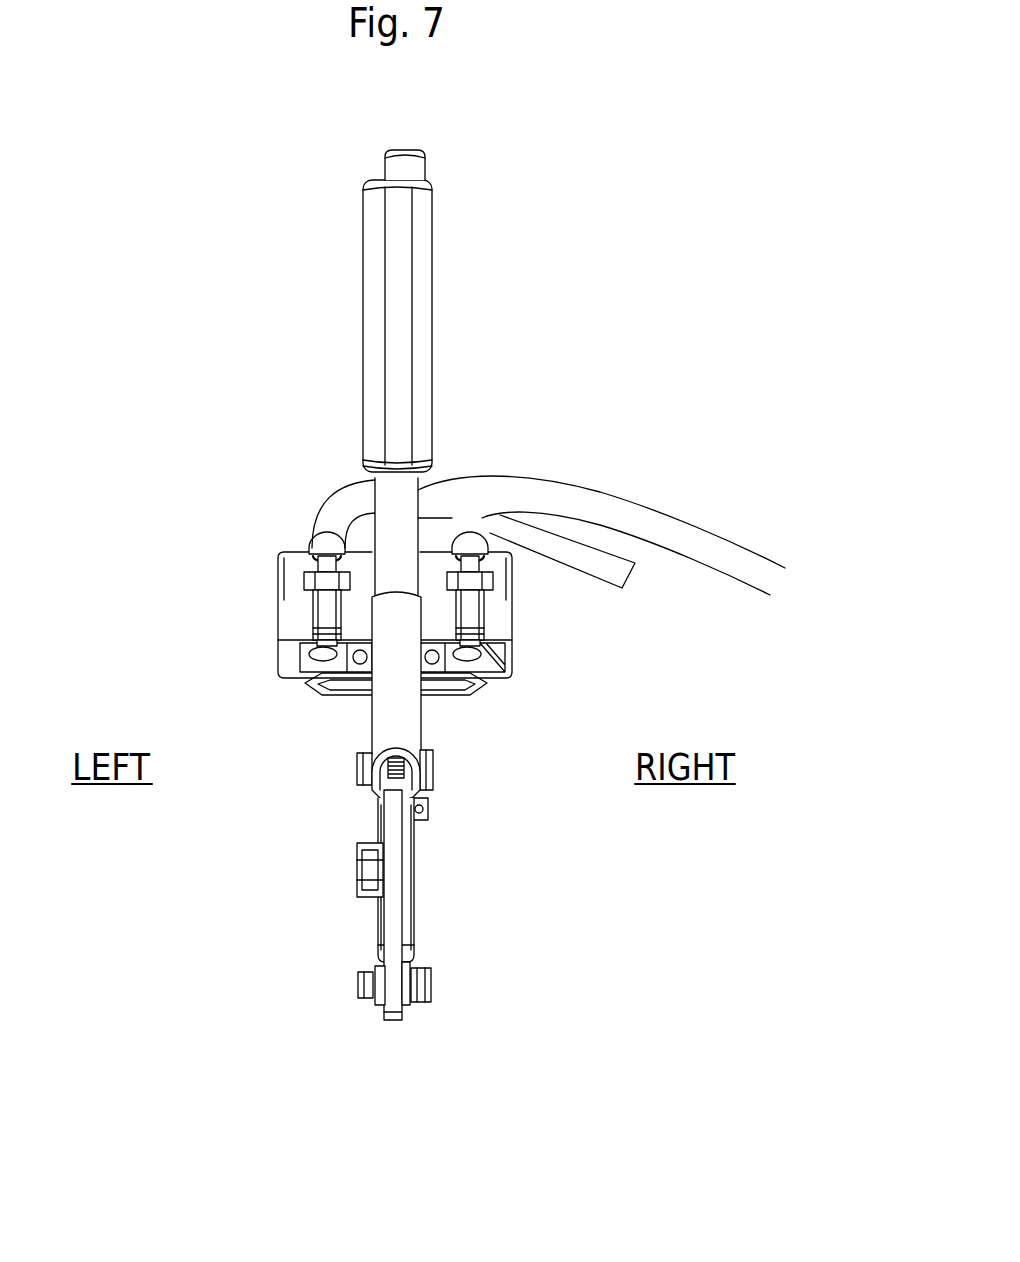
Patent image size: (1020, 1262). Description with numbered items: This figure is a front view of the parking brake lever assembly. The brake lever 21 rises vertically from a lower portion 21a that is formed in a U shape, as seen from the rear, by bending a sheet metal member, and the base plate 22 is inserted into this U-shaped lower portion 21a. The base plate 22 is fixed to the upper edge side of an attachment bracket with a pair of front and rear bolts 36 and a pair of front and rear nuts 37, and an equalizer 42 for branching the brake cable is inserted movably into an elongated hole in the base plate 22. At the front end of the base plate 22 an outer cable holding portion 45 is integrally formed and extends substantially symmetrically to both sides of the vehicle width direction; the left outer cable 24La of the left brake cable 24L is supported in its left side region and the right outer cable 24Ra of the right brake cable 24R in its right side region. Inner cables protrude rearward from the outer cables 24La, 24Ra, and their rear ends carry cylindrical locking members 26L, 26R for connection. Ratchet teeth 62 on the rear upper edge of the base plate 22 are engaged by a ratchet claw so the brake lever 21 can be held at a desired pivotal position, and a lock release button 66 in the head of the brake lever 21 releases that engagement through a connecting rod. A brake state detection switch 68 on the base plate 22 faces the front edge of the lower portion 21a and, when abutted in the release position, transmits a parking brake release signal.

The brake lever 21 is at (400, 312).
The lower portion of the brake lever 21a is at (372, 835).
The base plate 22 is at (393, 1022).
The left brake cable 24L is at (337, 487).
The right brake cable 24R is at (575, 492).
The left outer cable 24La is at (330, 600).
The right outer cable 24Ra is at (467, 594).
The left locking member 26L is at (325, 653).
The right locking member 26R is at (468, 655).
The bolt 36 is at (433, 772).
The nut 37 is at (366, 749).
The equalizer 42 is at (437, 688).
The outer cable holding portion 45 is at (287, 593).
The ratchet teeth 62 is at (400, 775).
The lock release button 66 is at (415, 172).
The brake state detection switch 68 is at (357, 872).